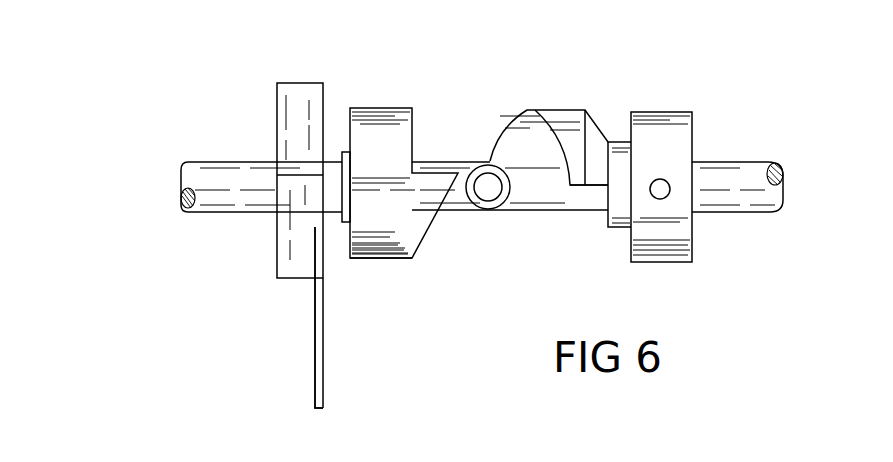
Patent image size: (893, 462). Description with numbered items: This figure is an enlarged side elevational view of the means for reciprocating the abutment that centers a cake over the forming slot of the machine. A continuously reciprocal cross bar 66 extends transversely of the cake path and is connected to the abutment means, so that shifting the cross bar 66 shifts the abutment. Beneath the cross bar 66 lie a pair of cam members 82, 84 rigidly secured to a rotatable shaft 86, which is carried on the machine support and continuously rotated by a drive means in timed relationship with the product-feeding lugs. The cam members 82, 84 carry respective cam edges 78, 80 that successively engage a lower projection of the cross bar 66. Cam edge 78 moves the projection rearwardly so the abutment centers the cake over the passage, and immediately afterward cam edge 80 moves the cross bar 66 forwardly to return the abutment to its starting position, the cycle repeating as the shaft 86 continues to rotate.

The cross bar 66 is at (307, 88).
The cam edge 78 is at (433, 223).
The cam edge 80 is at (498, 135).
The cam member 82 is at (393, 258).
The cam member 84 is at (572, 135).
The rotatable shaft 86 is at (223, 198).